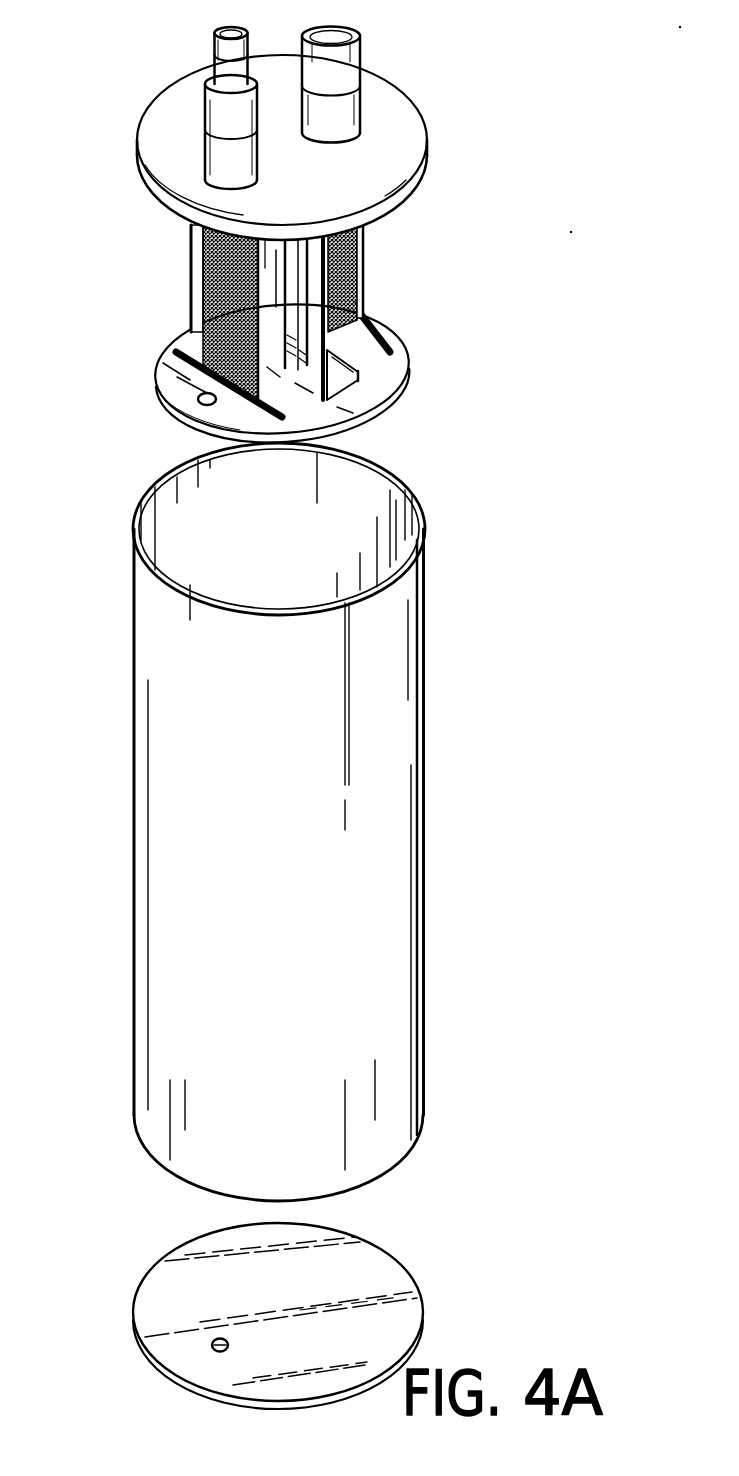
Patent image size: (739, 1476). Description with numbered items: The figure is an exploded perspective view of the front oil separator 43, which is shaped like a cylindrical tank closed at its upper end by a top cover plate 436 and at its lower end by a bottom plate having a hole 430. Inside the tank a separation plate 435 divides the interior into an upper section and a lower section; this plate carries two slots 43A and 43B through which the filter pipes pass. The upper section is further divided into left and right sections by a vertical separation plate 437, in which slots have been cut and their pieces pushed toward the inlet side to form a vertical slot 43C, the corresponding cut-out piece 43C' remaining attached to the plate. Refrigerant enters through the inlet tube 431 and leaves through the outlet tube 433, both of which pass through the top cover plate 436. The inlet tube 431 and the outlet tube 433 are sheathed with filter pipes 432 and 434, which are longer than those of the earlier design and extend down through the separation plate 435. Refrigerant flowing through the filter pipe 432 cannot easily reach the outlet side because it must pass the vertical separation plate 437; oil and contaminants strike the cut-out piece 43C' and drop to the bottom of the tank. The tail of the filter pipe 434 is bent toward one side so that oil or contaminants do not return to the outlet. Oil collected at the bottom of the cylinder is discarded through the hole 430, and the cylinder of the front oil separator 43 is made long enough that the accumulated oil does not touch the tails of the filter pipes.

The front oil separator 43 is at (422, 833).
The hole 430 is at (211, 1345).
The inlet tube 431 is at (208, 157).
The filter pipe 432 is at (207, 345).
The outlet tube 433 is at (347, 72).
The filter pipe 434 is at (358, 273).
The separation plate 435 is at (393, 340).
The top cover plate 436 is at (425, 132).
The vertical separation plate 437 is at (197, 287).
The slot 43A is at (192, 423).
The slot 43B is at (392, 360).
The vertical slot 43C is at (405, 416).
The cut-out piece 43C' is at (416, 399).